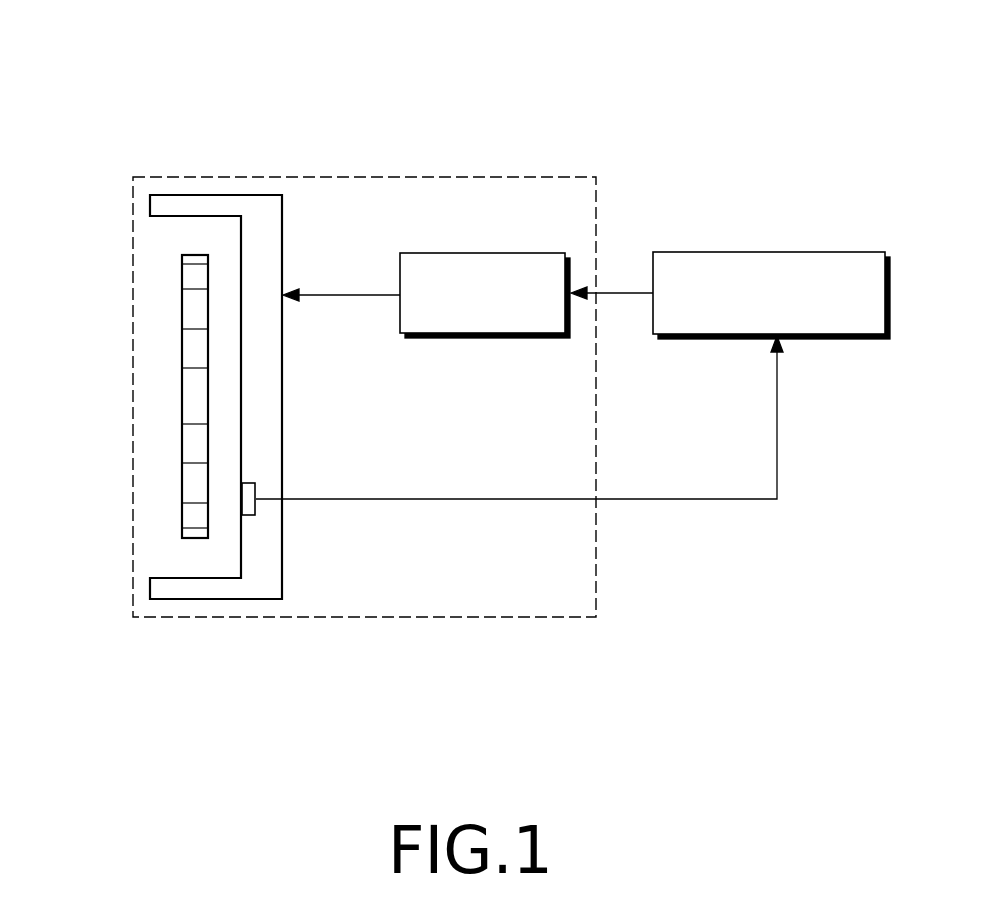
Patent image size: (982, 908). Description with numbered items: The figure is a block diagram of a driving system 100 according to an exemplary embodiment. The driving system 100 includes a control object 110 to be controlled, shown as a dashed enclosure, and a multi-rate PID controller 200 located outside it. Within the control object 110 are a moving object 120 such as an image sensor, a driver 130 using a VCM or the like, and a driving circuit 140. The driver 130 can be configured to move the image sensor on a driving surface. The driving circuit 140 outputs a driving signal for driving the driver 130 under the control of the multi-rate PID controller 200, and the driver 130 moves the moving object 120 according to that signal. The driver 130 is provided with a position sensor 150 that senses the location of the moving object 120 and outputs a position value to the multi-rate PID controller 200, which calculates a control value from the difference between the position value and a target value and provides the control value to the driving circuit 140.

The driving system 100 is at (518, 54).
The control object 110 is at (455, 165).
The moving object 120 is at (188, 443).
The driver 130 is at (214, 195).
The driving circuit 140 is at (482, 250).
The position sensor 150 is at (256, 510).
The multi-rate PID controller 200 is at (770, 250).